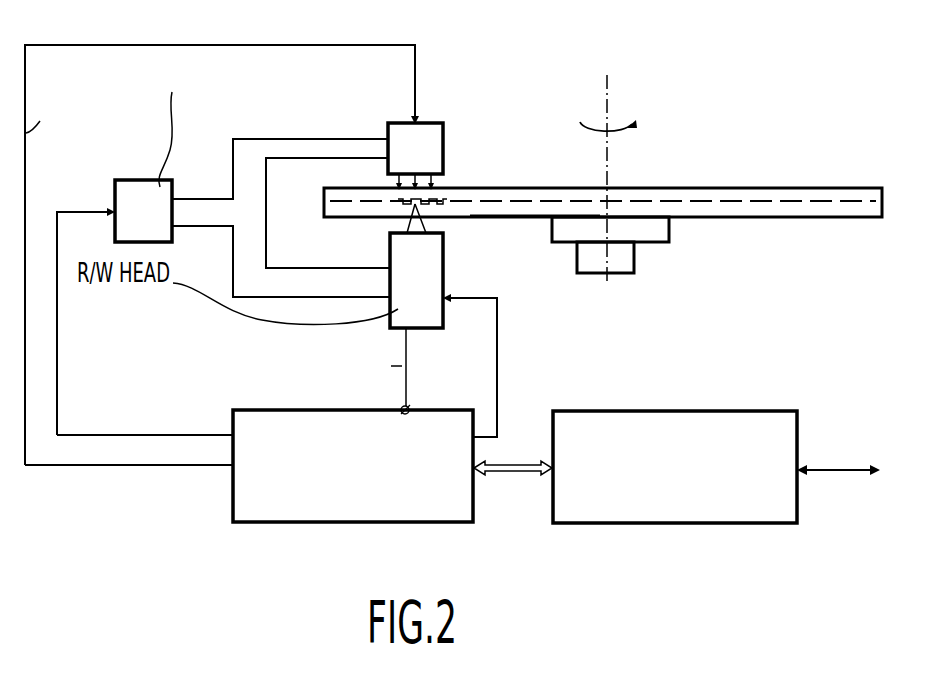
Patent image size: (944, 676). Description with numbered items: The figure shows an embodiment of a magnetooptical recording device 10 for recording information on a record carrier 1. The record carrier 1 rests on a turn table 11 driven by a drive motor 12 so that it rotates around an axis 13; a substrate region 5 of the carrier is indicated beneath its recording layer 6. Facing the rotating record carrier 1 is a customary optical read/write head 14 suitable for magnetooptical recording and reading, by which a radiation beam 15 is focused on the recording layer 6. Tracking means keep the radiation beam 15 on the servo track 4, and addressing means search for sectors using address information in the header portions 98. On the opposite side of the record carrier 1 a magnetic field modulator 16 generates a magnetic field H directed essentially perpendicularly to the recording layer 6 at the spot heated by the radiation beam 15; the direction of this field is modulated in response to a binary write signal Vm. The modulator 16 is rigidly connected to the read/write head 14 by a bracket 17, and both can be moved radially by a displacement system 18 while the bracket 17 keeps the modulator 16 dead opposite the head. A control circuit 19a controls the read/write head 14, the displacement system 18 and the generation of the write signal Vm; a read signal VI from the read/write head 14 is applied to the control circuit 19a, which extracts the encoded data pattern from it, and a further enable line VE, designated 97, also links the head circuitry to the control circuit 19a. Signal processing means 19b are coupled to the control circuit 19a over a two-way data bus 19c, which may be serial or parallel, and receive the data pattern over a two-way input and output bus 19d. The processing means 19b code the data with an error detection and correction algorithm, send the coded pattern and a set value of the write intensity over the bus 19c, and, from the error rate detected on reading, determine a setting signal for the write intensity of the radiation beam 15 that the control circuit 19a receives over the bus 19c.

The record carrier 1 is at (732, 192).
The servo track 4 is at (399, 190).
The disk substrate 5 is at (527, 213).
The recording layer 6 is at (489, 200).
The magnetooptical recording device 10 is at (534, 52).
The turn table 11 is at (653, 230).
The drive motor 12 is at (623, 258).
The axis 13 is at (609, 86).
The optical read/write head 14 is at (436, 272).
The radiation beam 15 is at (409, 228).
The magnetic field modulator 16 is at (433, 143).
The bracket 17 is at (313, 140).
The displacement system 18 is at (138, 178).
The control circuit 19a is at (300, 524).
The signal processing means 19b is at (630, 525).
The two-way data bus 19c is at (517, 478).
The two-way bus 19d is at (835, 476).
The enable signal line VE 97 is at (491, 365).
The header portions 98 is at (401, 408).
The magnetic field H is at (430, 187).
The binary write signal Vm is at (47, 123).
The read signal VI is at (386, 367).
The signal VE is at (500, 338).